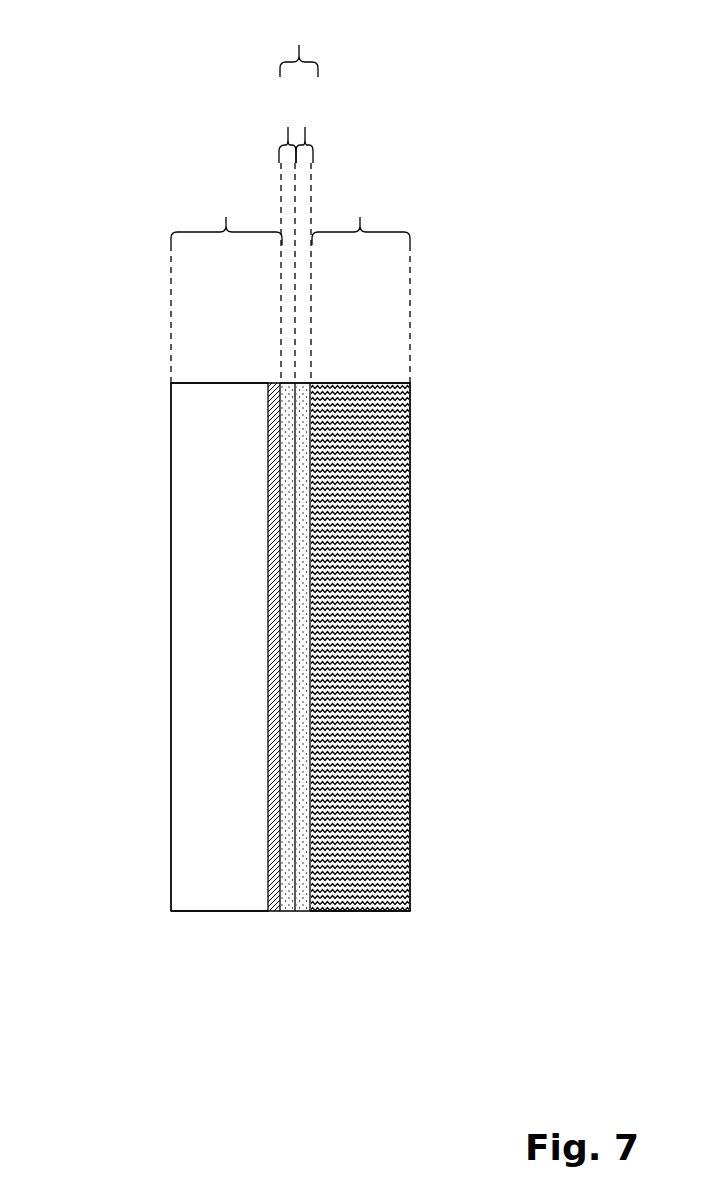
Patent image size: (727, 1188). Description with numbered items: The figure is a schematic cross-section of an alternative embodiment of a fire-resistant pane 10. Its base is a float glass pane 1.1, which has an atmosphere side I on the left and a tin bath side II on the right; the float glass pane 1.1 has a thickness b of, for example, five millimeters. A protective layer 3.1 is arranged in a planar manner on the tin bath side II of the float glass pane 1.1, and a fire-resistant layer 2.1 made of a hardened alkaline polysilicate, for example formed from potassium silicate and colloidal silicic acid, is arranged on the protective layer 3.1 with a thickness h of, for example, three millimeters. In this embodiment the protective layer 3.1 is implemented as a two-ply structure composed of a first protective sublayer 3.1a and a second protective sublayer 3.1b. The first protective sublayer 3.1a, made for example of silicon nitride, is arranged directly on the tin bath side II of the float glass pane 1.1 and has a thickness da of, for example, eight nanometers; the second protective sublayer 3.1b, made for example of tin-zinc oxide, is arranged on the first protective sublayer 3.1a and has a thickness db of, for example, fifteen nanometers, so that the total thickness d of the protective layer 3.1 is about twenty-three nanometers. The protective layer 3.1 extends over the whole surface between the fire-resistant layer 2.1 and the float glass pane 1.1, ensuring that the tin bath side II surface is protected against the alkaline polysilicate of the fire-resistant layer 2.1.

The fire-resistant pane 10 is at (155, 303).
The float glass pane 1.1 is at (193, 873).
The fire-resistant layer 2.1 is at (355, 893).
The protective layer 3.1 is at (302, 615).
The first protective sublayer 3.1a is at (287, 882).
The second protective sublayer 3.1b is at (303, 882).
The atmosphere side I is at (172, 422).
The tin bath side II is at (283, 394).
The thickness of the float glass pane b is at (226, 205).
The thickness of the fire-resistant layer h is at (361, 205).
The thickness of the protective layer d is at (299, 38).
The thickness of the first protective sublayer da is at (279, 123).
The thickness of the second protective sublayer db is at (320, 123).